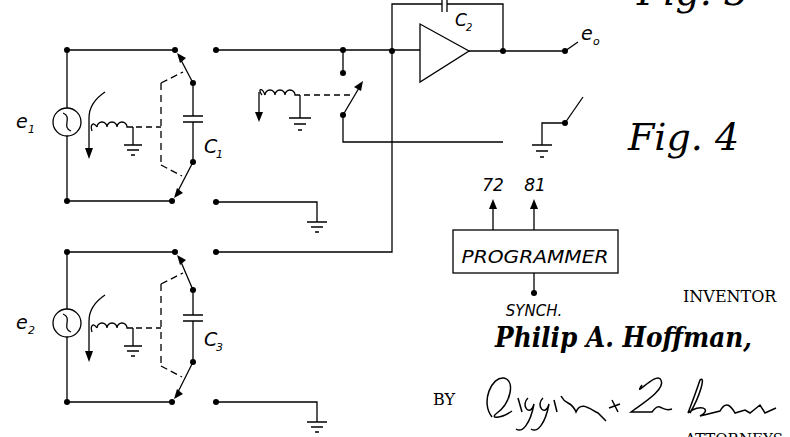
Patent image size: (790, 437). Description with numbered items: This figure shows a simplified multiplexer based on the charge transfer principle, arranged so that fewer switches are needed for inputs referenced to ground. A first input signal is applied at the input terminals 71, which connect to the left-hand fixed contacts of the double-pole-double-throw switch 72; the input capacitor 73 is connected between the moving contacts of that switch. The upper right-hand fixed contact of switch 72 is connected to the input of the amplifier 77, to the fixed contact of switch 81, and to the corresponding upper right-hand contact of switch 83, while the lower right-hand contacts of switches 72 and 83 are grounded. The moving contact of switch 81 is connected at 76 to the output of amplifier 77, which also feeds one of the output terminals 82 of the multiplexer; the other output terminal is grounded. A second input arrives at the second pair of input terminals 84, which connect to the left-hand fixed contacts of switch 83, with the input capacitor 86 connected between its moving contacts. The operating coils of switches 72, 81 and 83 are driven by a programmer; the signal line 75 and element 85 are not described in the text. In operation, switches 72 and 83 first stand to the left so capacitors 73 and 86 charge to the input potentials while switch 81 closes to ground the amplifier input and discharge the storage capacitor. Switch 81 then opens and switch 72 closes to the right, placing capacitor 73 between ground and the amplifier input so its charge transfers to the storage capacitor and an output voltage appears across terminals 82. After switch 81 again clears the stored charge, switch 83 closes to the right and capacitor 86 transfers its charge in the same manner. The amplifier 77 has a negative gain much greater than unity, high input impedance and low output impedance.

The input terminals 71 is at (56, 136).
The double-pole-double-throw switch 72 is at (161, 91).
The input capacitor 73 is at (197, 118).
The input lead 75 is at (278, 50).
The output terminal of the amplifier 76 is at (503, 51).
The amplifier 77 is at (450, 67).
The switch 81 is at (332, 98).
The output terminals 82 is at (565, 51).
The switch 83 is at (161, 292).
The second pair of input terminals 84 is at (58, 335).
The feedback switch 85 is at (579, 230).
The input capacitor 86 is at (198, 318).